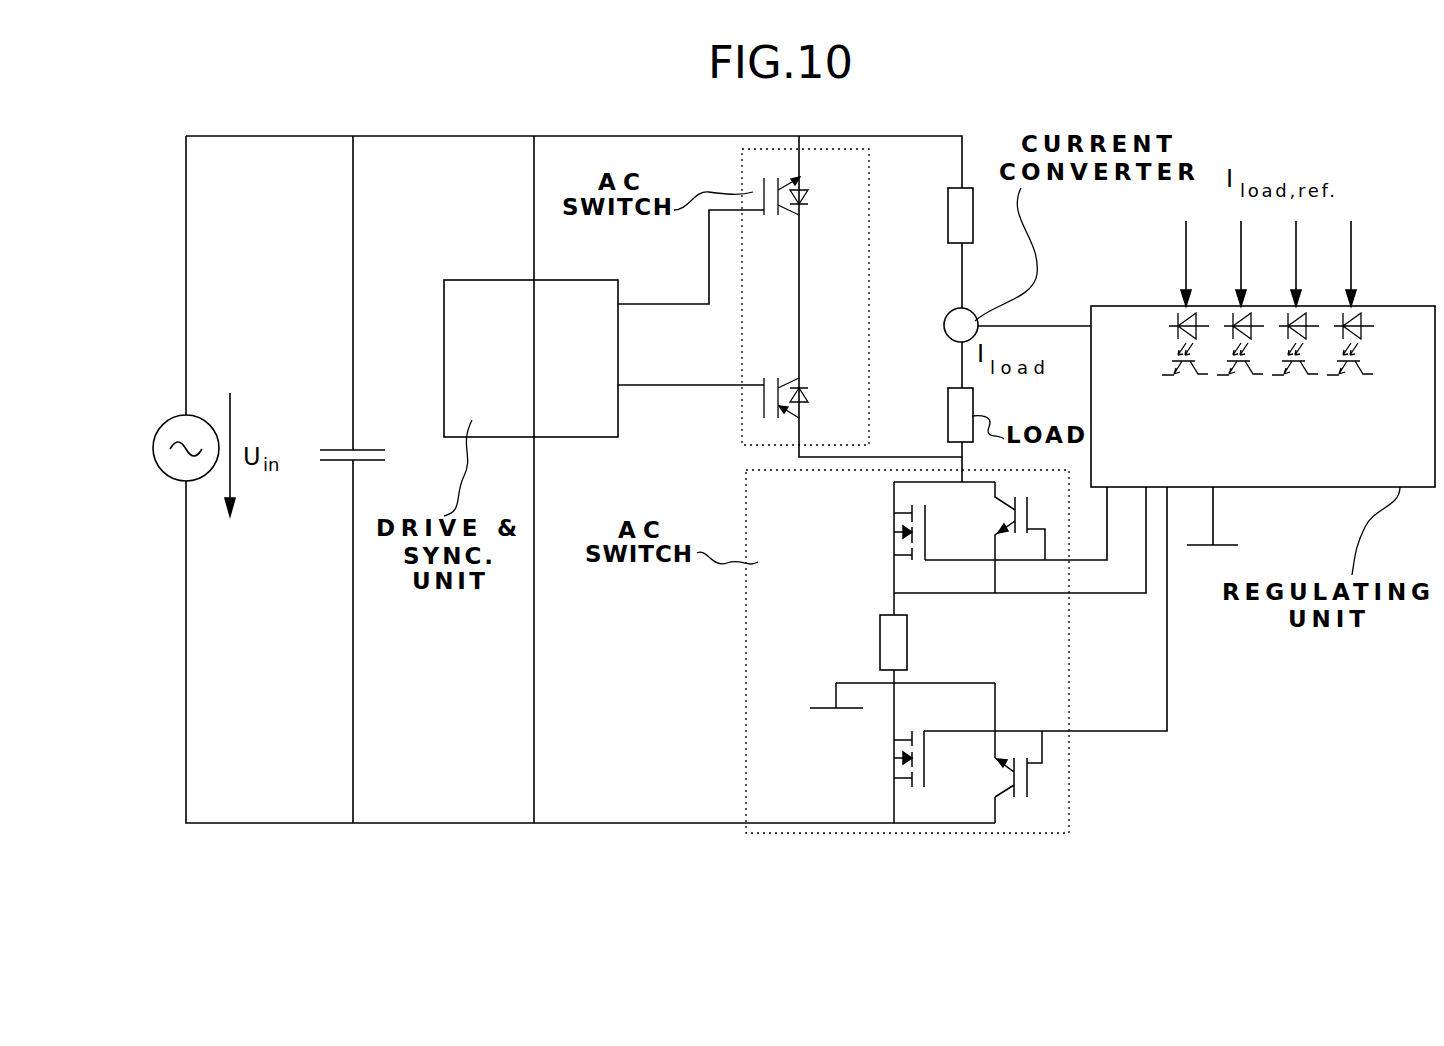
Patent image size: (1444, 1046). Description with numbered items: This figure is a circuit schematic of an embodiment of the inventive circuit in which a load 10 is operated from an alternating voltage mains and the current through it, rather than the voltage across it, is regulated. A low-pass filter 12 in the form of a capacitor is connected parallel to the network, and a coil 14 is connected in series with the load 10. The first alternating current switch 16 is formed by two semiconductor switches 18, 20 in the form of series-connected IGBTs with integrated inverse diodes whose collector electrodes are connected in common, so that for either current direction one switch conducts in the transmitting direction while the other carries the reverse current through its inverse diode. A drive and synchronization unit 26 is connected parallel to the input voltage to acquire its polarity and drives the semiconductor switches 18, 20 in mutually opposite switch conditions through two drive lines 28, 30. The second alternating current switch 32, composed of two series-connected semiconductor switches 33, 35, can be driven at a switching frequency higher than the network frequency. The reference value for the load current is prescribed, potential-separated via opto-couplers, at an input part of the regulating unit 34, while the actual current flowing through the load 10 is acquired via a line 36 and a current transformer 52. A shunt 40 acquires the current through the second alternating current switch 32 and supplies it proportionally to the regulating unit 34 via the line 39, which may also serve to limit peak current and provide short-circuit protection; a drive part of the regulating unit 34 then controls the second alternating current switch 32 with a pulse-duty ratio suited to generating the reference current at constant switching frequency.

The load 10 is at (945, 415).
The low-pass filter 12 is at (373, 459).
The coil 14 is at (945, 215).
The first alternating current switch 16 is at (753, 160).
The semiconductor switch 18 is at (807, 398).
The semiconductor switch 20 is at (807, 196).
The drive and synchronization unit 26 is at (531, 358).
The drive line 28 is at (691, 369).
The drive line 30 is at (691, 257).
The second alternating current switch 32 is at (762, 668).
The semiconductor switch 33 is at (969, 548).
The regulating unit 34 is at (1263, 354).
The semiconductor switch 35 is at (926, 746).
The line 36 is at (1034, 342).
The line 39 is at (1030, 609).
The shunt 40 is at (914, 642).
The current transformer 52 is at (943, 325).